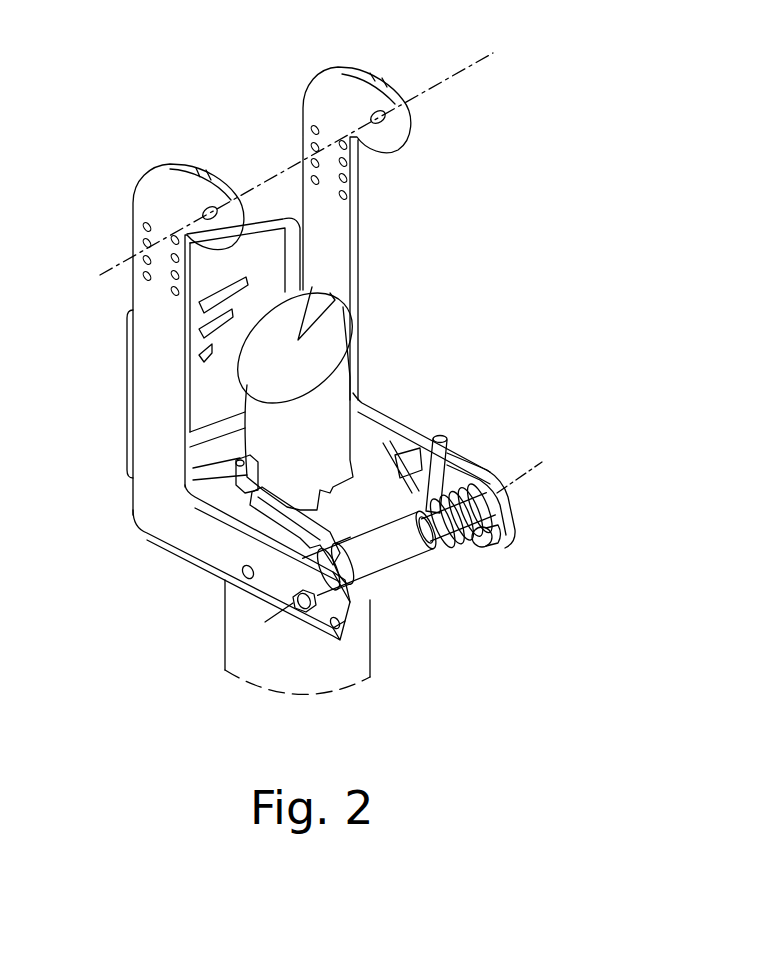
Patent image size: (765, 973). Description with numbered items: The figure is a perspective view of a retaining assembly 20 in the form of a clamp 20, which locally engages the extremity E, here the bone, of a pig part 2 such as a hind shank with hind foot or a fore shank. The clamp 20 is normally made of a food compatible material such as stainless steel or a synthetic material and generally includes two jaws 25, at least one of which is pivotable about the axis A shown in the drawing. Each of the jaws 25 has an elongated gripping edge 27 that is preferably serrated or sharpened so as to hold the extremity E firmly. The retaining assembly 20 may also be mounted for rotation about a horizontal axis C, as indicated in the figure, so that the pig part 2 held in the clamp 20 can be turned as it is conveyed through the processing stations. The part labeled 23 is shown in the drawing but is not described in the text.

The pig part 2 is at (248, 638).
The retaining assembly 20 is at (491, 294).
The arm 23 is at (157, 200).
The jaws 25 is at (217, 462).
The elongated gripping edge 27 is at (247, 463).
The axis A is at (518, 470).
The horizontal axis C is at (309, 156).
The extremity E is at (337, 383).